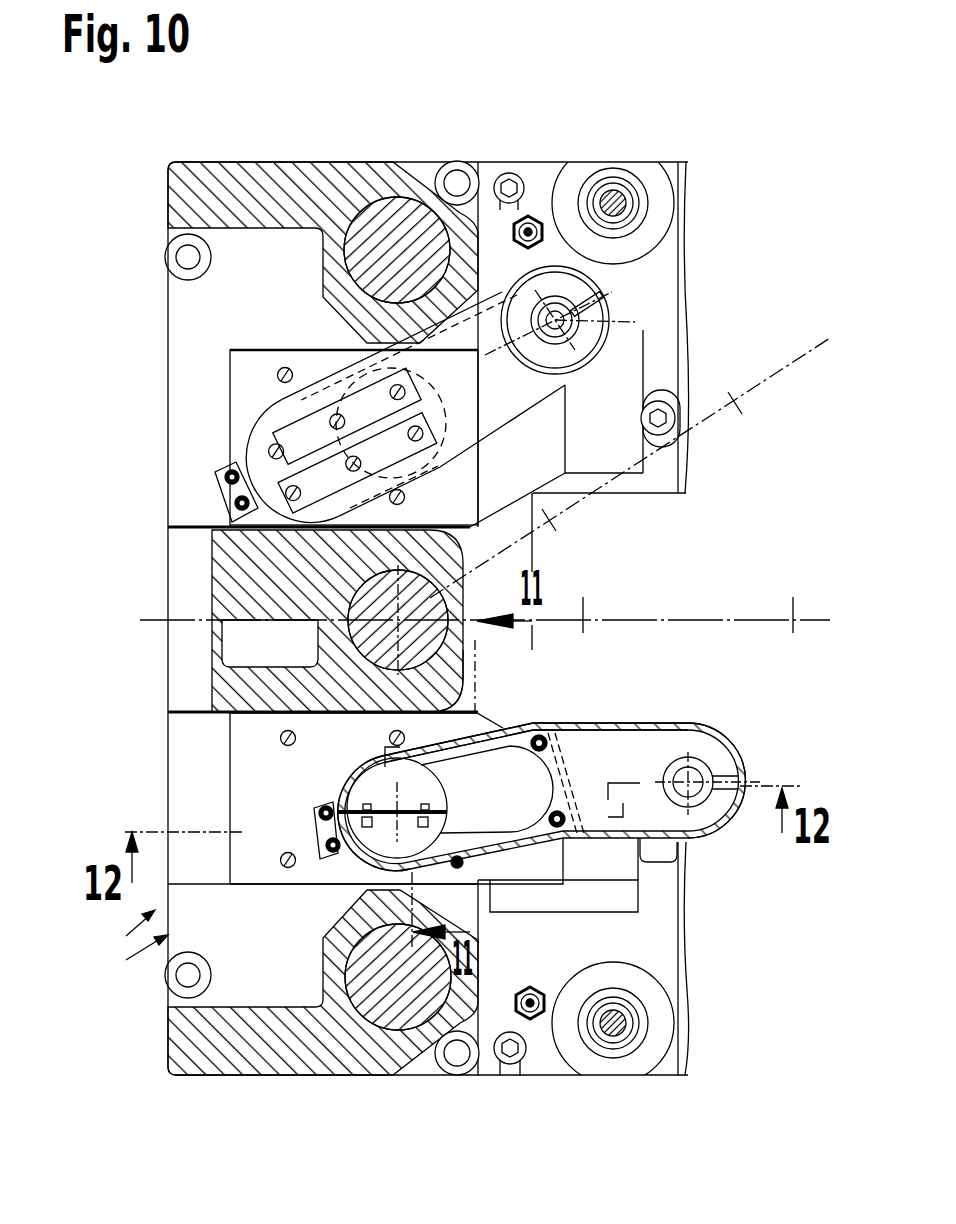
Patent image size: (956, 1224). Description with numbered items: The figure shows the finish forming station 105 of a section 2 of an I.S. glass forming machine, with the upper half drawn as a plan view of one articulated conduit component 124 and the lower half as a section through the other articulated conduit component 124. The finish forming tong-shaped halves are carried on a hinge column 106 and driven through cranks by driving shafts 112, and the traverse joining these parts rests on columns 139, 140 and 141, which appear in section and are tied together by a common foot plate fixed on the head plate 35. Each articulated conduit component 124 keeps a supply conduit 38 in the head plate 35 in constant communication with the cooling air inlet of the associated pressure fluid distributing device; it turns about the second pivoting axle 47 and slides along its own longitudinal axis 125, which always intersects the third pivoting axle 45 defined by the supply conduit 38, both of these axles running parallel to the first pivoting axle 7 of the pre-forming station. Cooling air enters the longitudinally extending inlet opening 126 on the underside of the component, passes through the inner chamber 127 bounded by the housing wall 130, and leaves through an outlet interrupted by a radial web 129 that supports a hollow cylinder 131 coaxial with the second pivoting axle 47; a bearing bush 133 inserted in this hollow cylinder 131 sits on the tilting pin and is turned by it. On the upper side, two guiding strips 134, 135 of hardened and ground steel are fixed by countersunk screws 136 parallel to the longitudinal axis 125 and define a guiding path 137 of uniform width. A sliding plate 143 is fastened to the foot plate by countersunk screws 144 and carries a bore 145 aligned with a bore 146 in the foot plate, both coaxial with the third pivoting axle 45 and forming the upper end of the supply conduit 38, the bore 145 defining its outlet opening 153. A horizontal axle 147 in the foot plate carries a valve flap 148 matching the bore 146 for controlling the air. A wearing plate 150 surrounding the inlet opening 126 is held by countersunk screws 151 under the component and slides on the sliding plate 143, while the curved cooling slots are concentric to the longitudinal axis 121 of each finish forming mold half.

The section 2 is at (134, 930).
The first pivoting axle 7 is at (410, 632).
The head plate 35 is at (440, 162).
The supply conduit 38 is at (442, 468).
The third pivoting axle 45 is at (390, 396).
The second pivoting axle 47 is at (580, 308).
The finish forming station 105 is at (128, 954).
The hinge column 106 is at (432, 604).
The driving shaft 112 is at (357, 252).
The longitudinal axis 121 is at (740, 403).
The articulated conduit component 124 is at (640, 321).
The longitudinal axis 125 is at (218, 490).
The inlet opening 126 is at (520, 723).
The inner chamber 127 is at (634, 723).
The radial web 129 is at (585, 288).
The housing wall 130 is at (516, 292).
The hollow cylinder 131 is at (587, 338).
The bearing bush 133 is at (553, 305).
The guiding strip 134 is at (255, 438).
The guiding strip 135 is at (400, 499).
The countersunk screw 136 is at (273, 440).
The guiding path 137 is at (447, 410).
The column 139 is at (330, 935).
The column 140 is at (468, 657).
The column 141 is at (333, 322).
The sliding plate 143 is at (229, 356).
The countersunk screw 144 is at (283, 370).
The bore 145 is at (402, 756).
The bore 146 is at (400, 758).
The horizontal axle 147 is at (445, 810).
The valve flap 148 is at (448, 820).
The wearing plate 150 is at (568, 773).
The countersunk screw 151 is at (548, 744).
The outlet opening 153 is at (463, 858).